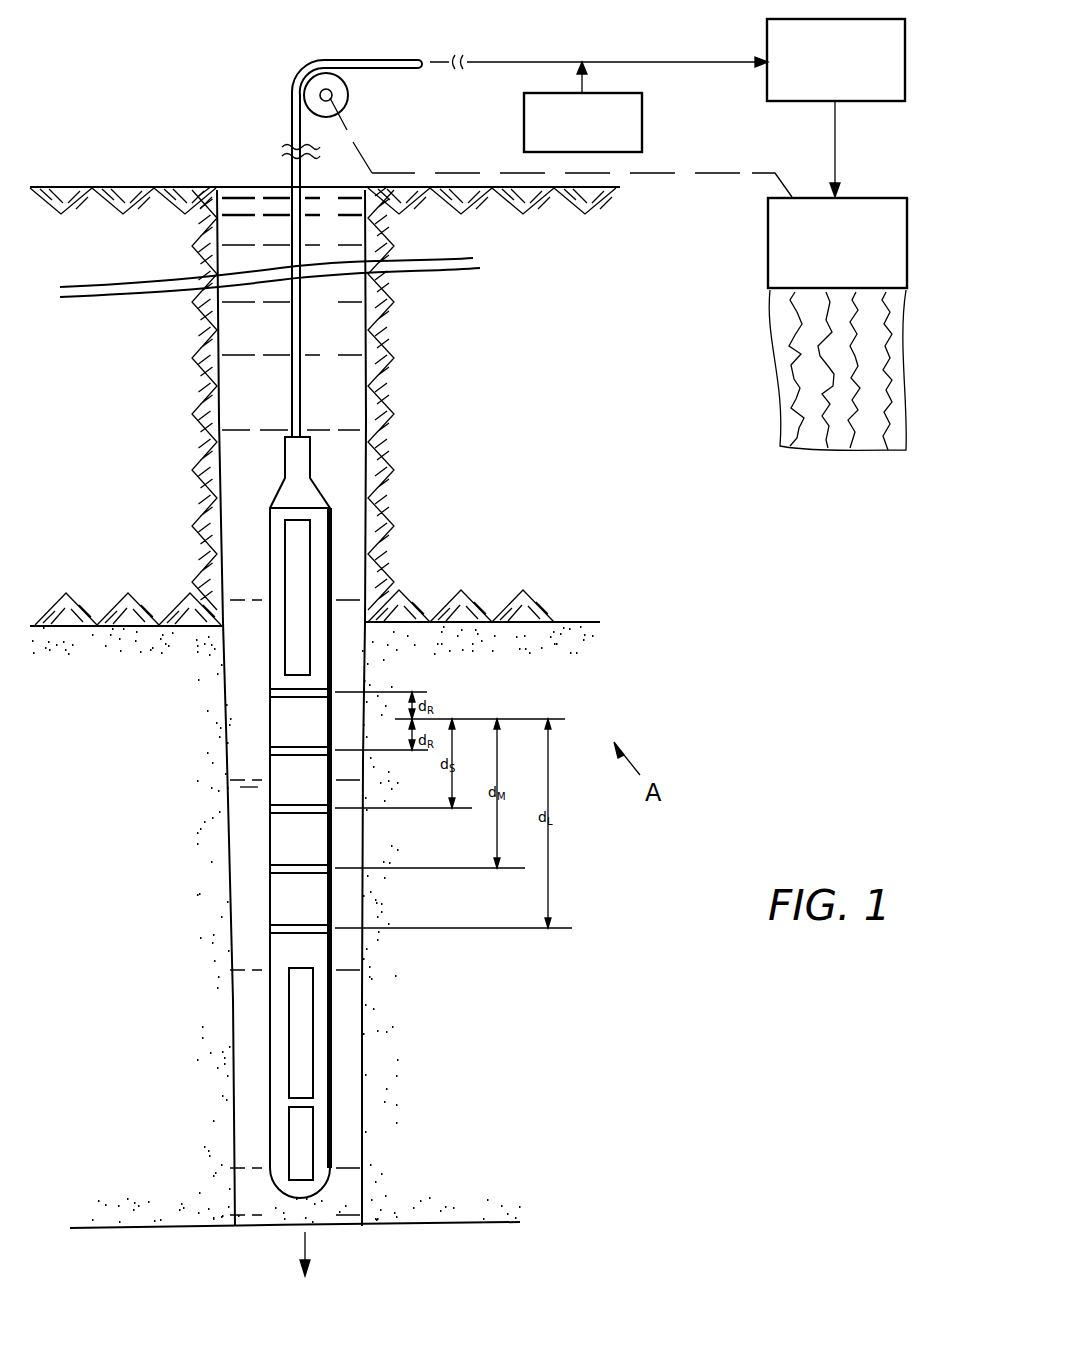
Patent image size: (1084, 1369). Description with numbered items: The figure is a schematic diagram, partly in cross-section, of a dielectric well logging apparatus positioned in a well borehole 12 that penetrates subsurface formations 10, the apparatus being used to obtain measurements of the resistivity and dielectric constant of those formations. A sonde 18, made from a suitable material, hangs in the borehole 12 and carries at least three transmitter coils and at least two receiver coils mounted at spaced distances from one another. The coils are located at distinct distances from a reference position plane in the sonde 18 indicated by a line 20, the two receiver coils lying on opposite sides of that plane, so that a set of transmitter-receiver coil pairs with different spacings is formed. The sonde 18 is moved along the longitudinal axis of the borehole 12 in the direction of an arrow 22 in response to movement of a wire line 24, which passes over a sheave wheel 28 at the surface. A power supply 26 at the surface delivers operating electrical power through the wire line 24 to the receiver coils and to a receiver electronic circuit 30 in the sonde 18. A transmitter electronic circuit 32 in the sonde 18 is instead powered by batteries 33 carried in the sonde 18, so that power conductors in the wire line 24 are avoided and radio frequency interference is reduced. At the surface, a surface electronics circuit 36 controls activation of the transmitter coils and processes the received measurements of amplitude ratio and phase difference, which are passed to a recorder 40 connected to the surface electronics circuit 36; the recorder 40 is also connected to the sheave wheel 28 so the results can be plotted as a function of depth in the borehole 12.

The subsurface formations 10 is at (323, 817).
The well borehole 12 is at (357, 470).
The sonde 18 is at (271, 1086).
The reference position plane line 20 is at (533, 719).
The arrow 22 is at (306, 1252).
The wire line 24 is at (291, 122).
The power supply 26 is at (645, 119).
The sheave wheel 28 is at (350, 98).
The receiver electronic circuit 30 is at (285, 573).
The transmitter electronic circuit 32 is at (314, 1040).
The batteries 33 is at (314, 1144).
The surface electronics circuit 36 is at (828, 18).
The recorder 40 is at (863, 197).